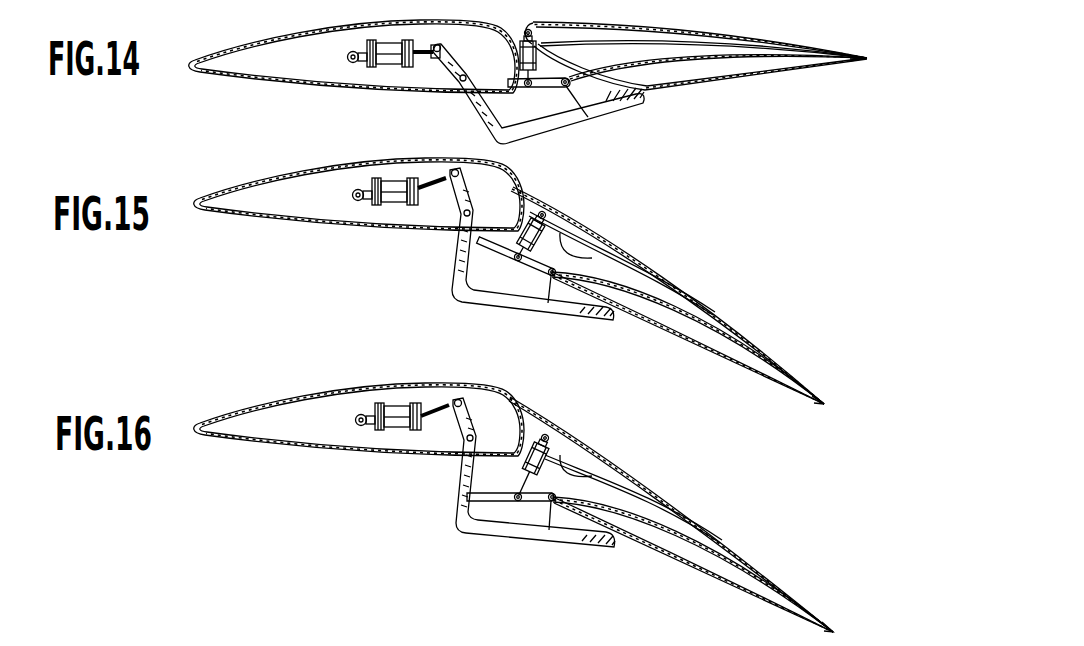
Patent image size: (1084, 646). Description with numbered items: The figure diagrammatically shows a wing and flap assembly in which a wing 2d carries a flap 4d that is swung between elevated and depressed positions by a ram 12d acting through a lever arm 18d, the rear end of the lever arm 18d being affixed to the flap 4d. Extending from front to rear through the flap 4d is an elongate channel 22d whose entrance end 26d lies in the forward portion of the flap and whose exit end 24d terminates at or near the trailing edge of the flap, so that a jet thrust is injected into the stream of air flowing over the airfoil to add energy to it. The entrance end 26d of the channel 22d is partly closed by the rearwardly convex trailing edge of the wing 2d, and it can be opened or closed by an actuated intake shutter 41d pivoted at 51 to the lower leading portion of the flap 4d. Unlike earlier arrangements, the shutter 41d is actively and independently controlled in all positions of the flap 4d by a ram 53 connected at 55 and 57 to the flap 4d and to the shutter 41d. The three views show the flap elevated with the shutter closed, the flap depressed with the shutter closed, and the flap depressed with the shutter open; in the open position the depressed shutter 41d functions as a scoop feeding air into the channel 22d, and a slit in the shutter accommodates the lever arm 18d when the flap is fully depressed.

In FIG. 14, the wing 2d is at (268, 36).
In FIG. 15, the wing 2d is at (265, 185).
In FIG. 16, the wing 2d is at (237, 409).
In FIG. 14, the flap 4d is at (567, 33).
In FIG. 15, the flap 4d is at (578, 226).
In FIG. 16, the flap 4d is at (566, 448).
In FIG. 14, the ram 12d is at (388, 42).
In FIG. 15, the ram 12d is at (386, 180).
In FIG. 16, the ram 12d is at (388, 404).
In FIG. 14, the lever arm 18d is at (641, 98).
In FIG. 15, the lever arm 18d is at (583, 318).
In FIG. 16, the lever arm 18d is at (587, 546).
In FIG. 14, the channel 22d is at (675, 30).
In FIG. 15, the channel 22d is at (692, 302).
In FIG. 16, the channel 22d is at (687, 519).
In FIG. 14, the exit end of channel 24d is at (850, 63).
In FIG. 15, the exit end of channel 24d is at (813, 403).
In FIG. 16, the exit end of channel 24d is at (822, 632).
In FIG. 14, the entrance end of channel 26d is at (572, 55).
In FIG. 15, the entrance end of channel 26d is at (572, 256).
In FIG. 16, the entrance end of channel 26d is at (572, 477).
In FIG. 14, the shutter 41d is at (484, 106).
In FIG. 15, the shutter 41d is at (490, 250).
In FIG. 16, the shutter 41d is at (492, 501).
In FIG. 14, the pivot 51 is at (588, 117).
In FIG. 15, the pivot 51 is at (550, 316).
In FIG. 16, the pivot 51 is at (549, 532).
In FIG. 14, the ram 53 is at (567, 78).
In FIG. 15, the ram 53 is at (554, 268).
In FIG. 16, the ram 53 is at (554, 493).
In FIG. 14, the ram connection 55 is at (527, 30).
In FIG. 15, the ram connection 55 is at (543, 211).
In FIG. 16, the ram connection 55 is at (545, 434).
In FIG. 14, the ram connection 57 is at (530, 88).
In FIG. 15, the ram connection 57 is at (515, 260).
In FIG. 16, the ram connection 57 is at (519, 503).